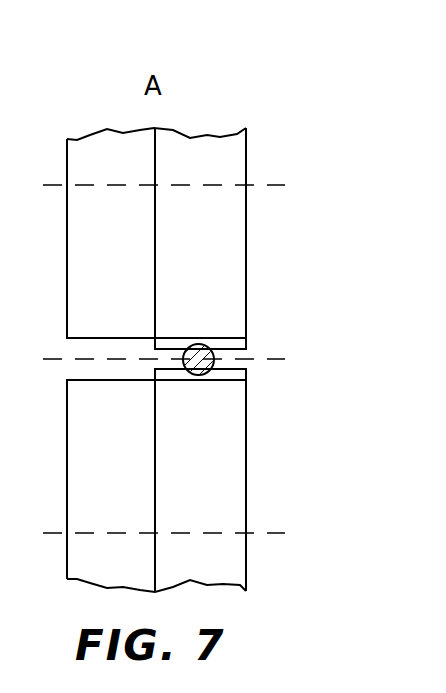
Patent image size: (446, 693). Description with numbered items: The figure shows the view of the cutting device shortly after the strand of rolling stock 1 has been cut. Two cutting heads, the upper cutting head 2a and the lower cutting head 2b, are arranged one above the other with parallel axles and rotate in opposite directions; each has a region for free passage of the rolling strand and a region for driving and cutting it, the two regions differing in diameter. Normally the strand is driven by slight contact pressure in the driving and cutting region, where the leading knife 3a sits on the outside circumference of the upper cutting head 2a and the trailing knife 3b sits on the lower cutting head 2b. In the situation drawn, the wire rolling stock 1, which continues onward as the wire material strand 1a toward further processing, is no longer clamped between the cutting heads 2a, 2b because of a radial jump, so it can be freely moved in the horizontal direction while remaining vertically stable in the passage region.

The strand of rolling stock 1 is at (246, 343).
The wire material strand 1a is at (212, 341).
The upper cutting head 2a is at (230, 162).
The lower cutting head 2b is at (232, 555).
The leading knife 3a is at (237, 343).
The trailing knife 3b is at (237, 375).